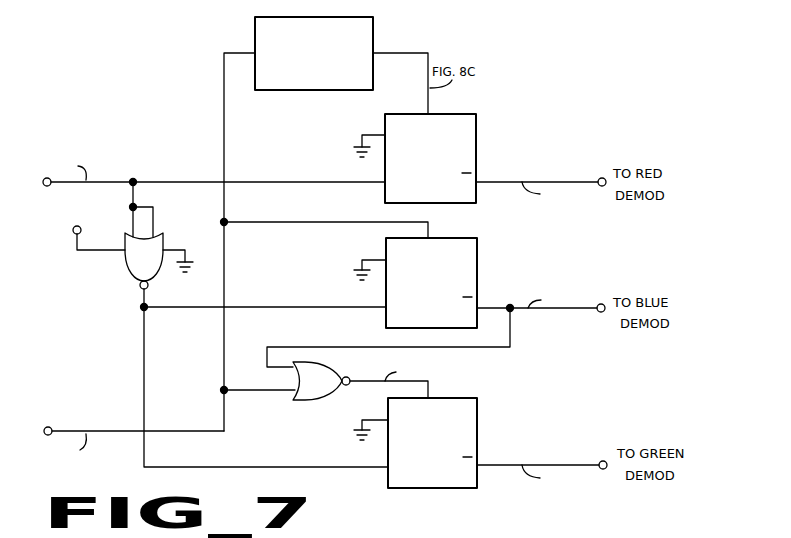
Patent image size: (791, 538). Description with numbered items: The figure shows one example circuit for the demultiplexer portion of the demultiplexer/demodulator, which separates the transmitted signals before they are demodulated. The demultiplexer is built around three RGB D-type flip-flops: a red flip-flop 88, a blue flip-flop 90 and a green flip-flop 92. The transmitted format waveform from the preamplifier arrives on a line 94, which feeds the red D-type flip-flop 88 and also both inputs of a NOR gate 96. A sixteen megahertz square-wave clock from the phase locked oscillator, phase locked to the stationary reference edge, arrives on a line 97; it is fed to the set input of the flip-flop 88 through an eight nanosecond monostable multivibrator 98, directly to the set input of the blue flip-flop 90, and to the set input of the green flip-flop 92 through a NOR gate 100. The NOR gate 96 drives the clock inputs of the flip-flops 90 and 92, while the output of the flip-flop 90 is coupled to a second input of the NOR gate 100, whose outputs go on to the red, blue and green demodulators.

The monostable multivibrator 98 is at (333, 15).
The line 94 is at (63, 186).
The red D-type flip-flop 88 is at (466, 112).
The NOR gate 96 is at (172, 234).
The blue flip-flop 90 is at (465, 236).
The NOR gate 100 is at (311, 406).
The green flip-flop 92 is at (484, 412).
The line 97 is at (60, 428).